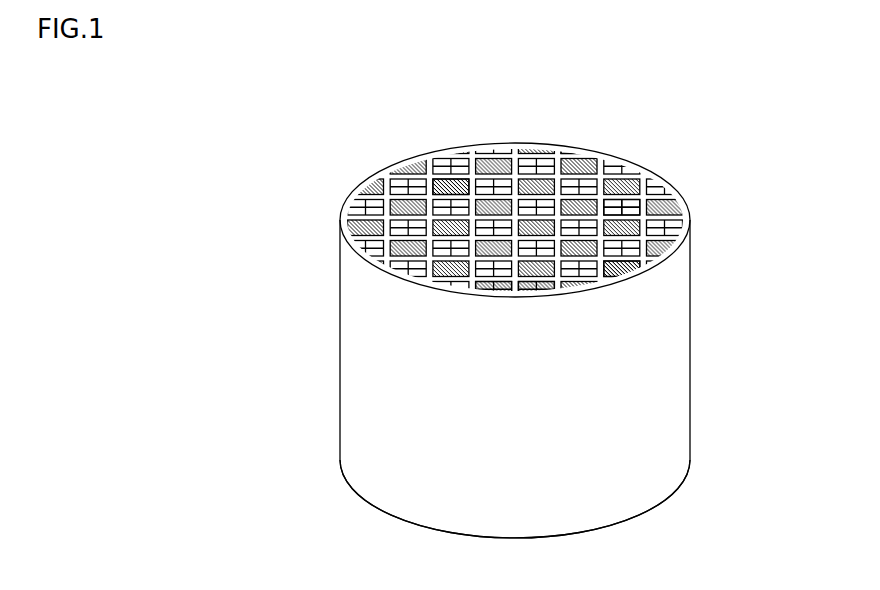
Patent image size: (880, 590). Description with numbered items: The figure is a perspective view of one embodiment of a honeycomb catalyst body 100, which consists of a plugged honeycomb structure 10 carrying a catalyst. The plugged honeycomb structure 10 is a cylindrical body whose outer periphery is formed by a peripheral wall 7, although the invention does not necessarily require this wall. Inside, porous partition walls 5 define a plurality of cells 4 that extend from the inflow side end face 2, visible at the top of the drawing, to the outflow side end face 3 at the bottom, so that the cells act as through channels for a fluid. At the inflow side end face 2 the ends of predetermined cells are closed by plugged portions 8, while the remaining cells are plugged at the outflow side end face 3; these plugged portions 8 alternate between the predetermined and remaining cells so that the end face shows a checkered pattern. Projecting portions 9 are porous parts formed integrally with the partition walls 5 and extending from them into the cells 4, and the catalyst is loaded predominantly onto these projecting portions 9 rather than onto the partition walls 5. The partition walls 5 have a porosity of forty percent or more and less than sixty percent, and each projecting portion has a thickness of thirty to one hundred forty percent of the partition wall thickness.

The honeycomb catalyst body 100 is at (781, 103).
The plugged honeycomb structure 10 is at (692, 355).
The peripheral wall 7 is at (343, 215).
The inflow side end face 2 is at (513, 142).
The projecting portion 9 is at (433, 180).
The cell 4 is at (630, 203).
The plugged portion 8 is at (618, 278).
The partition wall 5 is at (514, 256).
The outflow side end face 3 is at (508, 538).